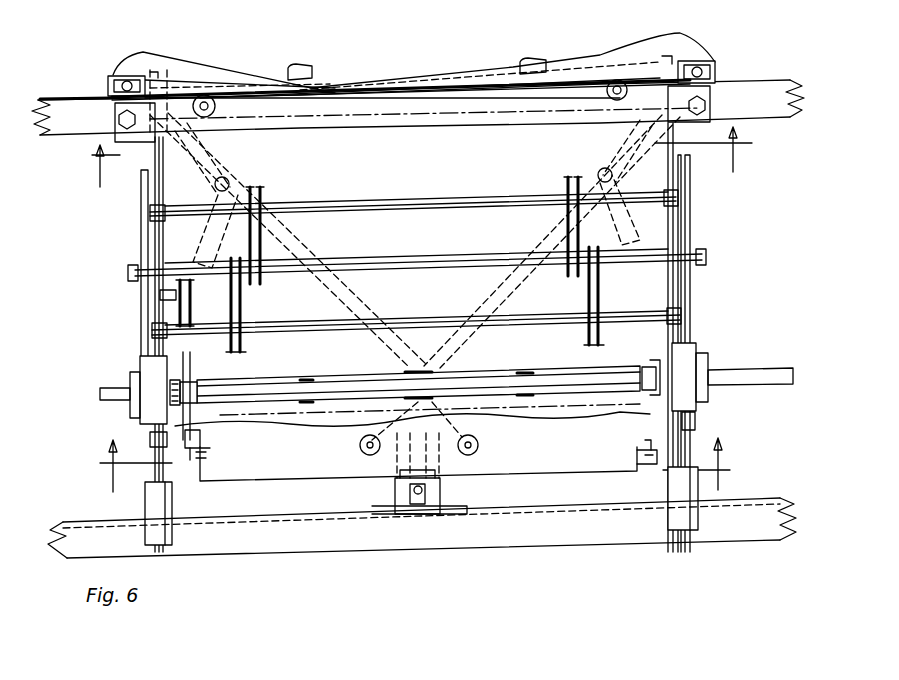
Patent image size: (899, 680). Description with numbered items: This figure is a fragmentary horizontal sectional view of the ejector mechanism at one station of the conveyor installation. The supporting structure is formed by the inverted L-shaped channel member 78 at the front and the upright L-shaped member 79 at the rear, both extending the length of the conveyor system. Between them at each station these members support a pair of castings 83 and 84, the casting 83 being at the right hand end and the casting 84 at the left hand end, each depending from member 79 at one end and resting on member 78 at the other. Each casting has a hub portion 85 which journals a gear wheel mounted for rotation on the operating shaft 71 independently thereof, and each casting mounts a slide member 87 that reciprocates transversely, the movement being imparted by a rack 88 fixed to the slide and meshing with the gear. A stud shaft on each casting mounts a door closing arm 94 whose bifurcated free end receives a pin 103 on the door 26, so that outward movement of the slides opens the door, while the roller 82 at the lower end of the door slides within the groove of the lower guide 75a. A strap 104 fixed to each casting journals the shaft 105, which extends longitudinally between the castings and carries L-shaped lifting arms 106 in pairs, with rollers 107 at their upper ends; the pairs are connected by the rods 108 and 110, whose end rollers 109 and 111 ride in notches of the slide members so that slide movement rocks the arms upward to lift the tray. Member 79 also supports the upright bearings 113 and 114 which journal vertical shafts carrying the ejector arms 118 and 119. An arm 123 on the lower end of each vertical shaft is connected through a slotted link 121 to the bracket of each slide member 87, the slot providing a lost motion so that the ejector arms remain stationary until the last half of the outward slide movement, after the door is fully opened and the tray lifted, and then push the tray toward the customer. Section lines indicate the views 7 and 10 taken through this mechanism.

The upright L-shaped member 79 is at (66, 118).
The upright bearing 113 is at (113, 76).
The upright bearing 114 is at (718, 72).
The arm 123 is at (196, 67).
The link 121 is at (296, 72).
The ejector arm 119 is at (432, 92).
The ejector arm 118 is at (548, 92).
The section line 7 is at (416, 157).
The slide member 87 is at (157, 248).
The rack 88 is at (152, 306).
The rod 110 is at (388, 200).
The roller 111 is at (150, 212).
The roller 107 is at (258, 191).
The lifting arm 106 is at (246, 320).
The shaft 105 is at (420, 262).
The strap 104 is at (706, 254).
The rod 108 is at (408, 322).
The roller 109 is at (152, 330).
The door closing arm 94 is at (212, 380).
The hub portion 85 is at (150, 376).
The operating shaft 71 is at (778, 372).
The section line 10 is at (413, 464).
The door 26 is at (315, 465).
The pin 103 is at (646, 468).
The roller 82 is at (420, 492).
The lower guide 75a is at (400, 492).
The casting 84 is at (145, 512).
The casting 83 is at (700, 492).
The inverted L-shaped channel member 78 is at (752, 524).